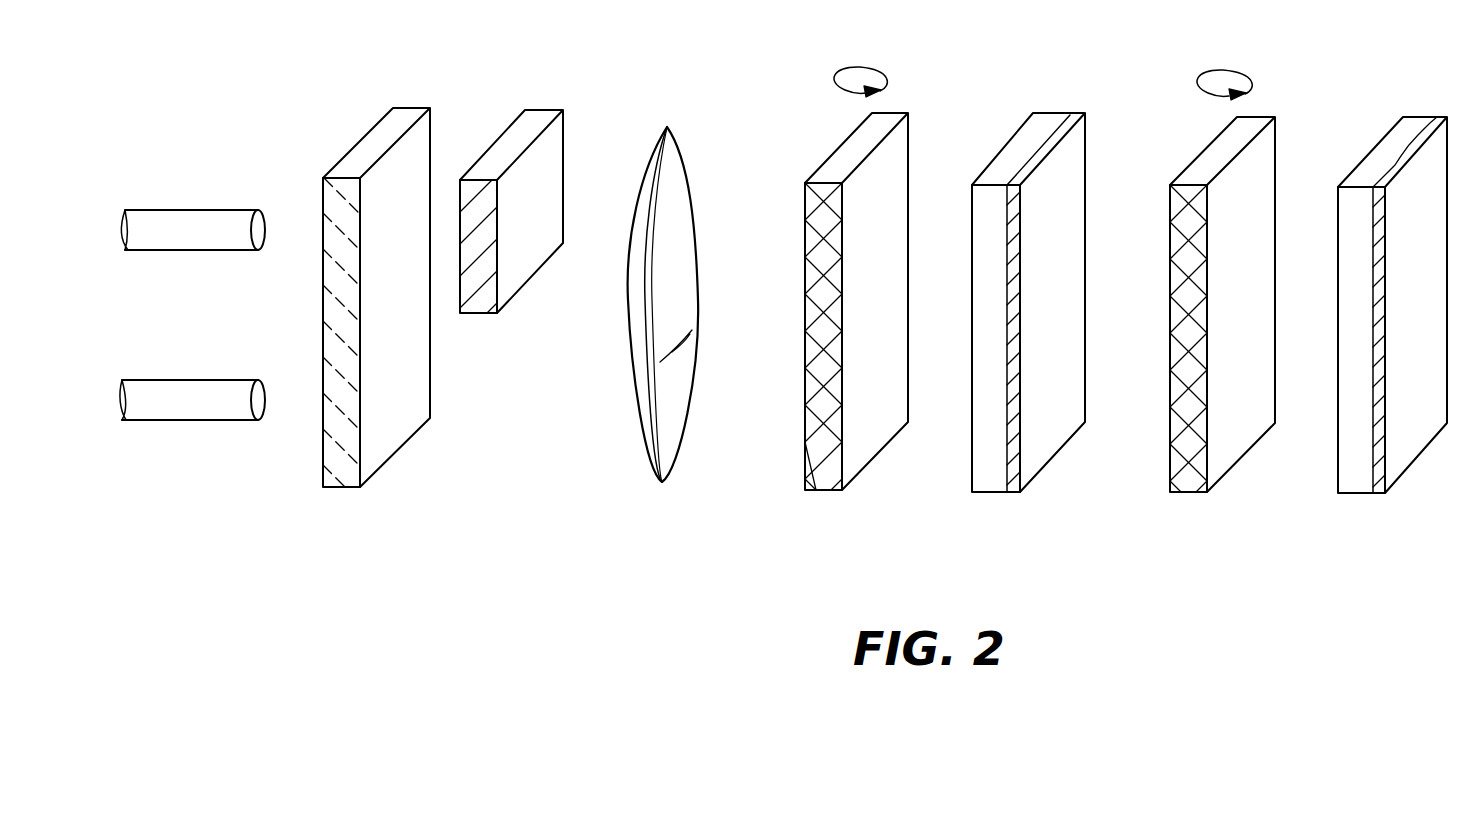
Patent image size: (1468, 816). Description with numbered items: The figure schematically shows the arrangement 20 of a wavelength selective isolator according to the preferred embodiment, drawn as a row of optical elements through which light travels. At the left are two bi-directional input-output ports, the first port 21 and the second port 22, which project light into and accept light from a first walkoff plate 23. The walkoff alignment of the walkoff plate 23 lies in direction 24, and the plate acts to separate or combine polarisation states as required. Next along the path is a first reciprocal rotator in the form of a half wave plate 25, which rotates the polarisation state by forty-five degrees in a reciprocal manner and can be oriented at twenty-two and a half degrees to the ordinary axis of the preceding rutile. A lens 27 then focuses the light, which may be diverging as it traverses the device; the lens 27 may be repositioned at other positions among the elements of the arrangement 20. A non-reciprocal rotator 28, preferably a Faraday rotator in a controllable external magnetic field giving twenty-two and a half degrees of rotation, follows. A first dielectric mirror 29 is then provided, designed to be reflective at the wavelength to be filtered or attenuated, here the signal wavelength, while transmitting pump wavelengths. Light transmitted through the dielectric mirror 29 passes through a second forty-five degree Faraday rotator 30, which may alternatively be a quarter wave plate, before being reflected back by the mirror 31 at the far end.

The arrangement of the wavelength selective isolator 20 is at (513, 575).
The Port 1 21 is at (180, 208).
The Port 2 22 is at (240, 420).
The first walkoff plate 23 is at (345, 488).
The walkoff alignment direction 24 is at (397, 53).
The half wave plate 25 is at (540, 110).
The lens 27 is at (682, 137).
The non-reciprocal rotator 28 is at (848, 490).
The first dielectric mirror 29 is at (1050, 114).
The second Faraday rotator 30 is at (1228, 476).
The mirror 31 is at (1420, 117).